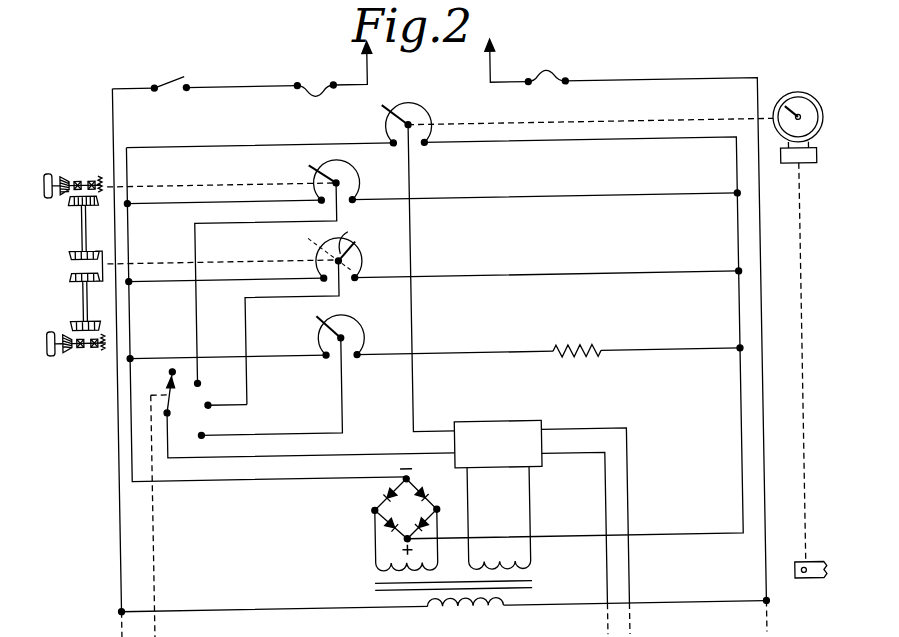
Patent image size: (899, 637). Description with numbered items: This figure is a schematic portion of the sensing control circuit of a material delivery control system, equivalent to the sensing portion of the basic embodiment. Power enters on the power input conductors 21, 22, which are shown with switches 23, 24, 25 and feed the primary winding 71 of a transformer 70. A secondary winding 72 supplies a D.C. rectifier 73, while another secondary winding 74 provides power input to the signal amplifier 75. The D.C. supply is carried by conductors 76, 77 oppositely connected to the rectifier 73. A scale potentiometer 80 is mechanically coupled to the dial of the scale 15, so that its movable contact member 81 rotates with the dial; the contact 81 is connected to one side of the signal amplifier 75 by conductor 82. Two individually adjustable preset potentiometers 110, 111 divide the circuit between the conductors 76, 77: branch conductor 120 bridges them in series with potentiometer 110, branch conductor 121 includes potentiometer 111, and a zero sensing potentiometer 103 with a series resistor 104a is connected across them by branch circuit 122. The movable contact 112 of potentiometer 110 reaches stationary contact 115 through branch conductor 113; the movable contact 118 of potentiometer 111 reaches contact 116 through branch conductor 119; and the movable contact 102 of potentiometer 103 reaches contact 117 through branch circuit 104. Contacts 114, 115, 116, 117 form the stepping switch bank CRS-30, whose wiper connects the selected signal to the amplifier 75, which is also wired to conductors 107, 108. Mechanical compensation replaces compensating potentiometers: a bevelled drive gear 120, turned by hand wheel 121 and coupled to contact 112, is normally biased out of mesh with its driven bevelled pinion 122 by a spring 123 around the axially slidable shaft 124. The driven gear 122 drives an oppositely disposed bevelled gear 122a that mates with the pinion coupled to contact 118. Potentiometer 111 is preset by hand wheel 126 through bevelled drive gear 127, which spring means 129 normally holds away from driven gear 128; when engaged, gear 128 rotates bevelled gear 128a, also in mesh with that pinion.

The scale 15 is at (812, 170).
The power input conductor 21 is at (143, 82).
The power input conductor 22 is at (721, 82).
The switch 23 is at (189, 72).
The switch 24 is at (319, 78).
The switch 25 is at (548, 78).
The transformer 70 is at (536, 593).
The primary winding 71 is at (448, 611).
The secondary winding 72 is at (374, 562).
The D.C. rectifier 73 is at (380, 493).
The secondary winding 74 is at (512, 565).
The signal amplifier 75 is at (521, 424).
The D.C. conductor 76 is at (282, 142).
The D.C. conductor 77 is at (581, 146).
The scale potentiometer 80 is at (428, 112).
The movable contact member 81 is at (392, 125).
The conductor 82 is at (414, 240).
The movable contact 102 is at (345, 316).
The zero sensing potentiometer 103 is at (364, 334).
The branch circuit 104 is at (340, 405).
The resistor 104a is at (596, 352).
The conductor 107 is at (612, 416).
The conductor 108 is at (592, 456).
The preset potentiometer 110 is at (350, 168).
The preset potentiometer 111 is at (363, 258).
The movable contact 112 is at (311, 175).
The branch conductor 113 is at (237, 220).
The contact 114 is at (170, 367).
The stationary contact 115 is at (198, 380).
The contact 116 is at (208, 401).
The bank contact 117 is at (200, 433).
The movable contact 118 is at (342, 240).
The branch conductor 119 is at (276, 297).
The branch conductor / bevelled drive gear 120 is at (494, 198).
The branch conductor / hand wheel 121 is at (544, 277).
The branch circuit / driven bevelled pinion 122 is at (513, 355).
The bevelled gear 122a is at (77, 252).
The spring 123 is at (167, 402).
The axially slidable shaft 124 is at (101, 201).
The hand wheel 126 is at (50, 350).
The bevelled drive gear 127 is at (70, 350).
The driven gear 128 is at (74, 320).
The bevelled gear 128a is at (76, 284).
The spring means 129 is at (92, 350).
The bank CRS-3a CRS-30 is at (153, 419).